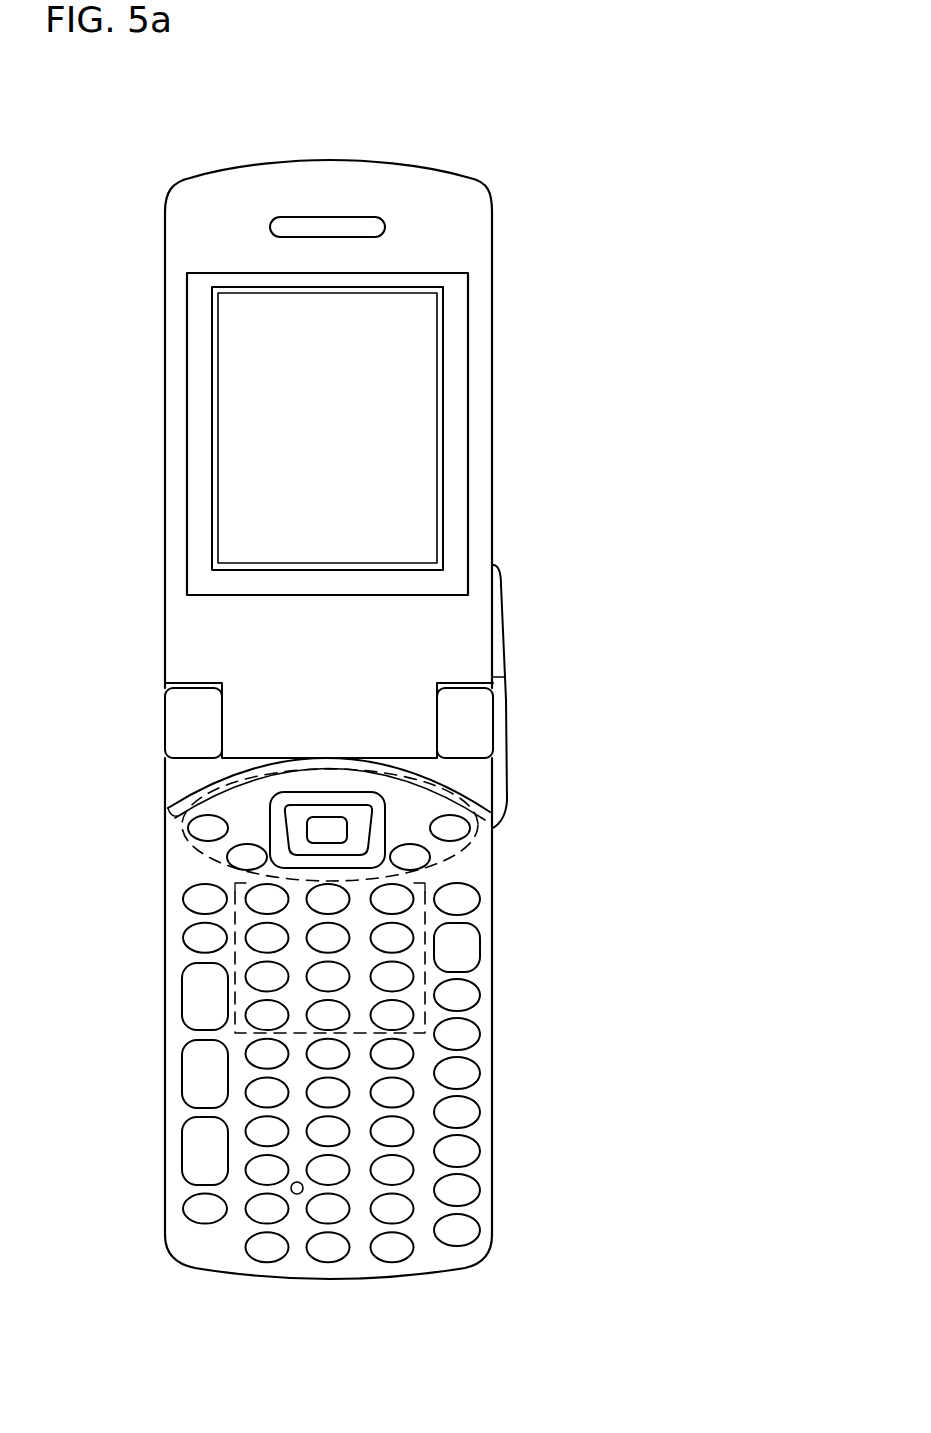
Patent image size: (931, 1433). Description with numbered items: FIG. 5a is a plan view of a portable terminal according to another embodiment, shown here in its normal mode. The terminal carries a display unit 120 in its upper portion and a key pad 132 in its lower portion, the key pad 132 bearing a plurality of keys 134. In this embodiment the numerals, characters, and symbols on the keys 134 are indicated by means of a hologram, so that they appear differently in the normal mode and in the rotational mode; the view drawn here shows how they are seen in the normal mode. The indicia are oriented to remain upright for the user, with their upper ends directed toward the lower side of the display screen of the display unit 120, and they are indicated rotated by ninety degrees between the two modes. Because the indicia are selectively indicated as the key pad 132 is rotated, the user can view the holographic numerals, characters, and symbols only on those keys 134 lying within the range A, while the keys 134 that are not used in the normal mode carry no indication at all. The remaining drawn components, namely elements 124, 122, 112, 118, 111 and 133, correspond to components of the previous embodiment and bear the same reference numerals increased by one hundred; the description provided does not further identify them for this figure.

The display unit 120 is at (442, 208).
The speaker 124 is at (325, 225).
The display 122 is at (417, 413).
The side hinge portion 112 is at (507, 619).
The hinge 118 is at (480, 723).
The lower housing (main body) 111 is at (168, 818).
The range A is at (470, 862).
The key pad 132 is at (430, 1247).
The microphone 133 is at (297, 1194).
The keys 134 is at (472, 1034).